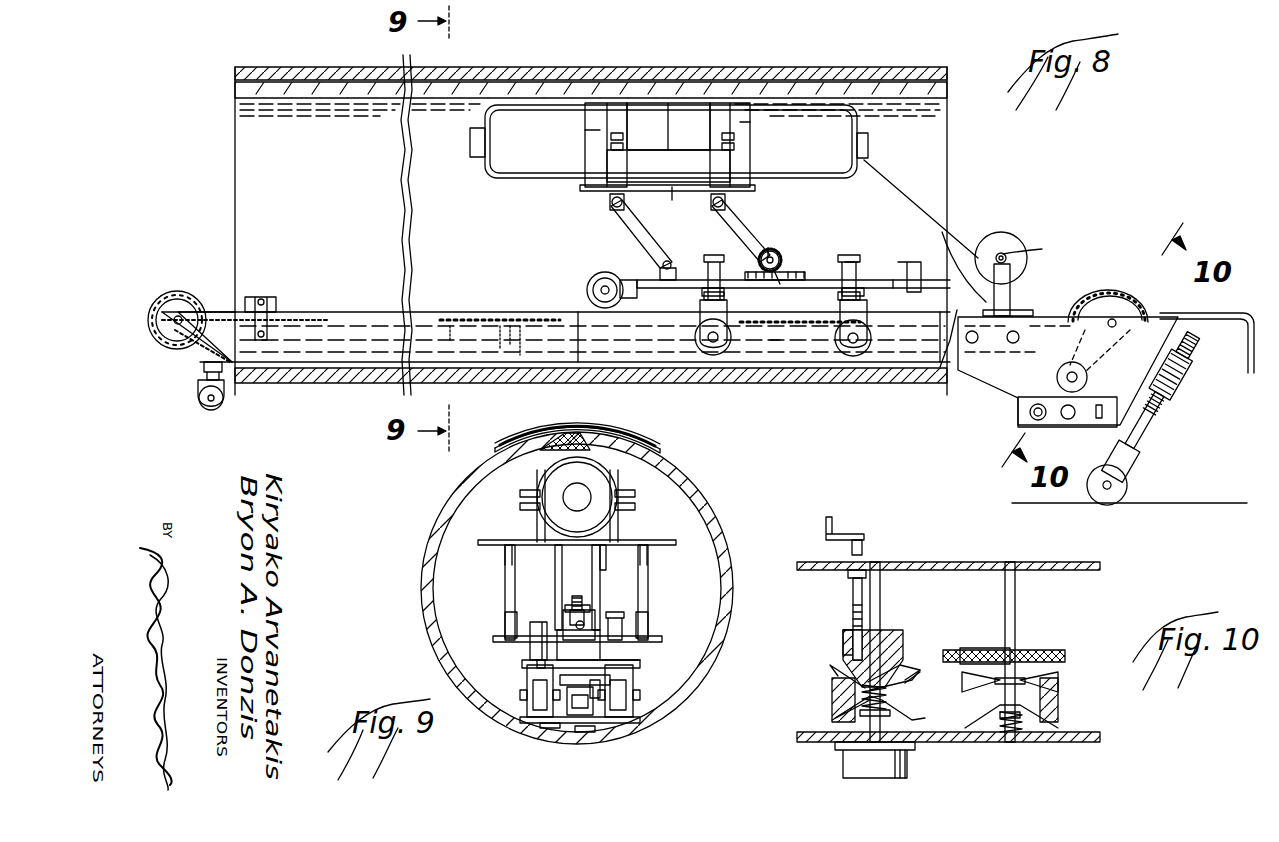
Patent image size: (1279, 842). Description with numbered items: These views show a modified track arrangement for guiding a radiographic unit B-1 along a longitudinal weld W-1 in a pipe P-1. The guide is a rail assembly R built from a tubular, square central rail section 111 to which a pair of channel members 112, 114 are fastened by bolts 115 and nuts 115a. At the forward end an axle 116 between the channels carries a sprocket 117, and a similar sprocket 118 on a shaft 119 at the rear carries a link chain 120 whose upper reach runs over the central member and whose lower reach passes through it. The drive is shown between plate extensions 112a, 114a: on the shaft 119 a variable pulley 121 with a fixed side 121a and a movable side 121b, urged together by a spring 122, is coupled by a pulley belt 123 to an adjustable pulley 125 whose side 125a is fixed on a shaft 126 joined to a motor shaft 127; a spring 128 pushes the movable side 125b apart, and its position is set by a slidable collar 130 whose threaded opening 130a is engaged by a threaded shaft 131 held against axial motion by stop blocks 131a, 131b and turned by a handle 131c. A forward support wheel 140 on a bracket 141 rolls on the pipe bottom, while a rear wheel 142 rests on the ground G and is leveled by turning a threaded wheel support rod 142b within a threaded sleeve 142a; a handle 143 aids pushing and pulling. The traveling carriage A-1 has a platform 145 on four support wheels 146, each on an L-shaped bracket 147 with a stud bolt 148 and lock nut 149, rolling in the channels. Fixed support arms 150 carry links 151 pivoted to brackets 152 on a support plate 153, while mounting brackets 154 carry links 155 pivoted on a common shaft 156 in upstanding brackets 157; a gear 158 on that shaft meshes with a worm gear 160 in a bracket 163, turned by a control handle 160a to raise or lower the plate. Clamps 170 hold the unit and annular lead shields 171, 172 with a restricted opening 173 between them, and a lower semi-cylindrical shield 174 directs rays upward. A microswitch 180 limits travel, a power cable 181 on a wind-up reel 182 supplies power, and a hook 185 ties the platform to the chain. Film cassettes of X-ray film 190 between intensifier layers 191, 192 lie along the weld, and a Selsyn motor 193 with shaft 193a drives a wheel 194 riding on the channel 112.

In FIG. 8, the central rail section 111 is at (470, 322).
In FIG. 9, the central rail section 111 is at (592, 730).
In FIG. 9, the channel member 112 is at (542, 724).
In FIG. 10, the plate extension 112a is at (960, 561).
In FIG. 8, the channel member 114 is at (300, 306).
In FIG. 9, the channel member 114 is at (625, 726).
In FIG. 8, the plate extension 114a is at (1005, 378).
In FIG. 10, the plate extension 114a is at (970, 742).
In FIG. 9, the bolt 115 is at (576, 722).
In FIG. 9, the nut 115a is at (615, 690).
In FIG. 8, the axle 116 is at (162, 320).
In FIG. 8, the sprocket 117 is at (174, 300).
In FIG. 8, the sprocket 118 is at (1100, 305).
In FIG. 10, the sprocket 118 is at (1024, 650).
In FIG. 8, the shaft 119 is at (1112, 318).
In FIG. 10, the shaft 119 is at (1018, 588).
In FIG. 8, the link chain 120 is at (202, 298).
In FIG. 9, the link chain 120 is at (616, 680).
In FIG. 10, the link chain 120 is at (1080, 652).
In FIG. 10, the variable pulley 121 is at (990, 690).
In FIG. 10, the fixed pulley side 121a is at (1055, 686).
In FIG. 10, the movable pulley side 121b is at (1058, 710).
In FIG. 10, the spring 122 is at (1025, 720).
In FIG. 10, the pulley belt 123 is at (833, 681).
In FIG. 10, the adjustable pulley 125 is at (886, 690).
In FIG. 10, the pulley side 125a is at (836, 713).
In FIG. 10, the movable pulley side 125b is at (920, 665).
In FIG. 10, the shaft 126 is at (882, 585).
In FIG. 10, the motor shaft 127 is at (860, 763).
In FIG. 10, the spring 128 is at (886, 700).
In FIG. 10, the slidable collar 130 is at (842, 656).
In FIG. 10, the threaded opening 130a is at (846, 639).
In FIG. 10, the threaded shaft 131 is at (852, 600).
In FIG. 10, the stop block 131a is at (850, 546).
In FIG. 10, the stop block 131b is at (848, 577).
In FIG. 10, the handle 131c is at (832, 526).
In FIG. 8, the forward support wheel 140 is at (200, 398).
In FIG. 8, the bracket 141 is at (200, 374).
In FIG. 8, the rear wheel 142 is at (1109, 471).
In FIG. 8, the threaded sleeve 142a is at (1191, 436).
In FIG. 8, the threaded wheel support rod 142b is at (1166, 409).
In FIG. 8, the handle 143 is at (1228, 314).
In FIG. 8, the platform 145 is at (683, 276).
In FIG. 8, the support wheel 146 is at (756, 335).
In FIG. 9, the support wheel 146 is at (618, 706).
In FIG. 8, the L-shaped bracket 147 is at (702, 329).
In FIG. 8, the stud bolt 148 is at (710, 266).
In FIG. 9, the stud bolt 148 is at (638, 618).
In FIG. 8, the lock nut 149 is at (702, 290).
In FIG. 9, the lock nut 149 is at (645, 640).
In FIG. 8, the fixed support arm 150 is at (662, 268).
In FIG. 9, the fixed support arm 150 is at (506, 626).
In FIG. 8, the link 151 is at (624, 221).
In FIG. 9, the link 151 is at (506, 570).
In FIG. 8, the bracket 152 is at (612, 193).
In FIG. 9, the bracket 152 is at (506, 547).
In FIG. 8, the support plate 153 is at (672, 192).
In FIG. 9, the support plate 153 is at (624, 542).
In FIG. 8, the mounting bracket 154 is at (725, 193).
In FIG. 9, the mounting bracket 154 is at (538, 553).
In FIG. 8, the link 155 is at (750, 215).
In FIG. 9, the link 155 is at (642, 567).
In FIG. 8, the common shaft 156 is at (782, 248).
In FIG. 9, the common shaft 156 is at (568, 608).
In FIG. 8, the upstanding bracket 157 is at (792, 260).
In FIG. 9, the upstanding bracket 157 is at (592, 605).
In FIG. 8, the gear 158 is at (773, 250).
In FIG. 9, the gear 158 is at (578, 597).
In FIG. 8, the worm gear 160 is at (748, 280).
In FIG. 9, the worm gear 160 is at (620, 624).
In FIG. 8, the control handle 160a is at (992, 267).
In FIG. 8, the bracket 163 is at (818, 273).
In FIG. 8, the clamp 170 is at (616, 104).
In FIG. 9, the clamp 170 is at (542, 462).
In FIG. 8, the annular lead shield 171 is at (584, 130).
In FIG. 8, the annular lead shield 172 is at (745, 122).
In FIG. 8, the restricted opening 173 is at (668, 108).
In FIG. 8, the lower semi-cylindrical shield 174 is at (630, 158).
In FIG. 8, the microswitch 180 is at (260, 294).
In FIG. 8, the power cable 181 is at (935, 238).
In FIG. 8, the wind-up reel 182 is at (1006, 240).
In FIG. 8, the hook 185 is at (868, 286).
In FIG. 9, the X-ray film 190 is at (640, 443).
In FIG. 9, the intensifier layer 191 is at (650, 449).
In FIG. 9, the intensifier layer 192 is at (615, 436).
In FIG. 8, the Selsyn motor 193 is at (590, 286).
In FIG. 9, the Selsyn motor 193 is at (568, 640).
In FIG. 8, the shaft 193a is at (600, 276).
In FIG. 9, the shaft 193a is at (532, 655).
In FIG. 8, the wheel 194 is at (590, 292).
In FIG. 9, the wheel 194 is at (532, 644).
In FIG. 8, the traveling carriage A-1 is at (850, 260).
In FIG. 8, the radiographic unit B-1 is at (860, 120).
In FIG. 9, the radiographic unit B-1 is at (600, 513).
In FIG. 8, the ground G is at (1228, 503).
In FIG. 8, the pipe P-1 is at (690, 384).
In FIG. 9, the pipe P-1 is at (700, 494).
In FIG. 8, the rail assembly R is at (770, 343).
In FIG. 9, the rail assembly R is at (645, 658).
In FIG. 8, the weld W-1 is at (280, 96).
In FIG. 9, the weld W-1 is at (585, 440).